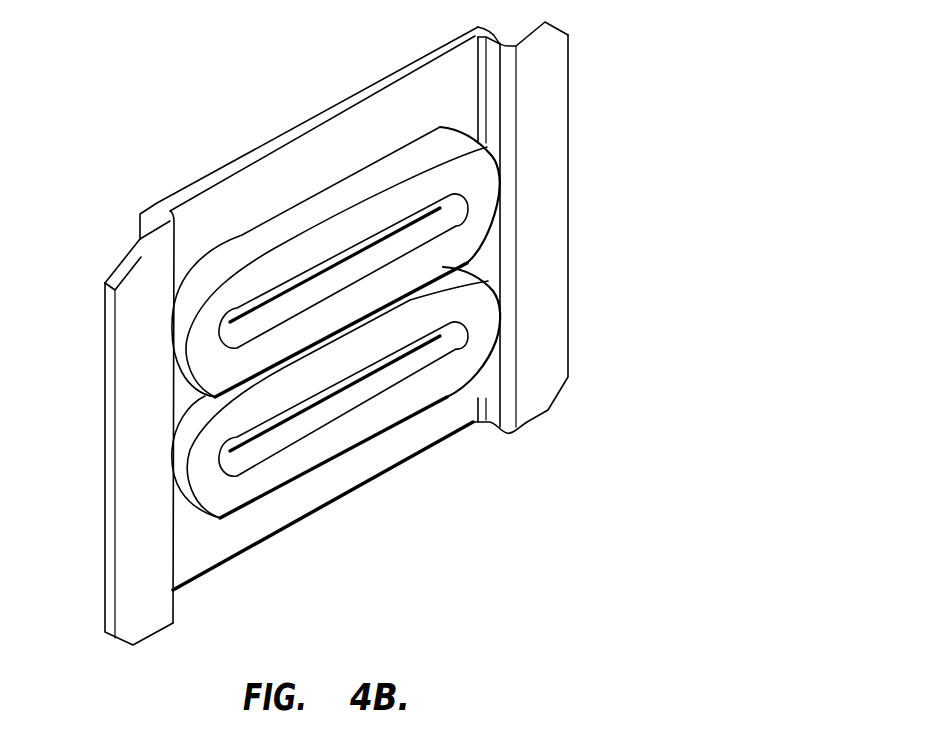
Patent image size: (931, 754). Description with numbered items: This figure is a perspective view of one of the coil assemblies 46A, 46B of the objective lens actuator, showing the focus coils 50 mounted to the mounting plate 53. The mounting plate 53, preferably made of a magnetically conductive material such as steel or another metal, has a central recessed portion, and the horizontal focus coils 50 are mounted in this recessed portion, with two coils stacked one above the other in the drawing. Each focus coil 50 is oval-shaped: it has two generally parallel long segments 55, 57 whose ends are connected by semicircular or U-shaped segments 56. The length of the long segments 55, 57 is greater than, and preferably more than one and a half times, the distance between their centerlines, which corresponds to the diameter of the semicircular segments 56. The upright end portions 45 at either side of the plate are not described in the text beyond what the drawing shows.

The end pillars / flanges 45 is at (531, 428).
The coil assembly 46A is at (403, 353).
The coil assembly 46B is at (403, 353).
The focus coils 50 is at (332, 378).
The mounting plate 53 is at (167, 201).
The long segment 55 is at (344, 460).
The semicircular segments 56 is at (478, 345).
The long segment 57 is at (410, 324).